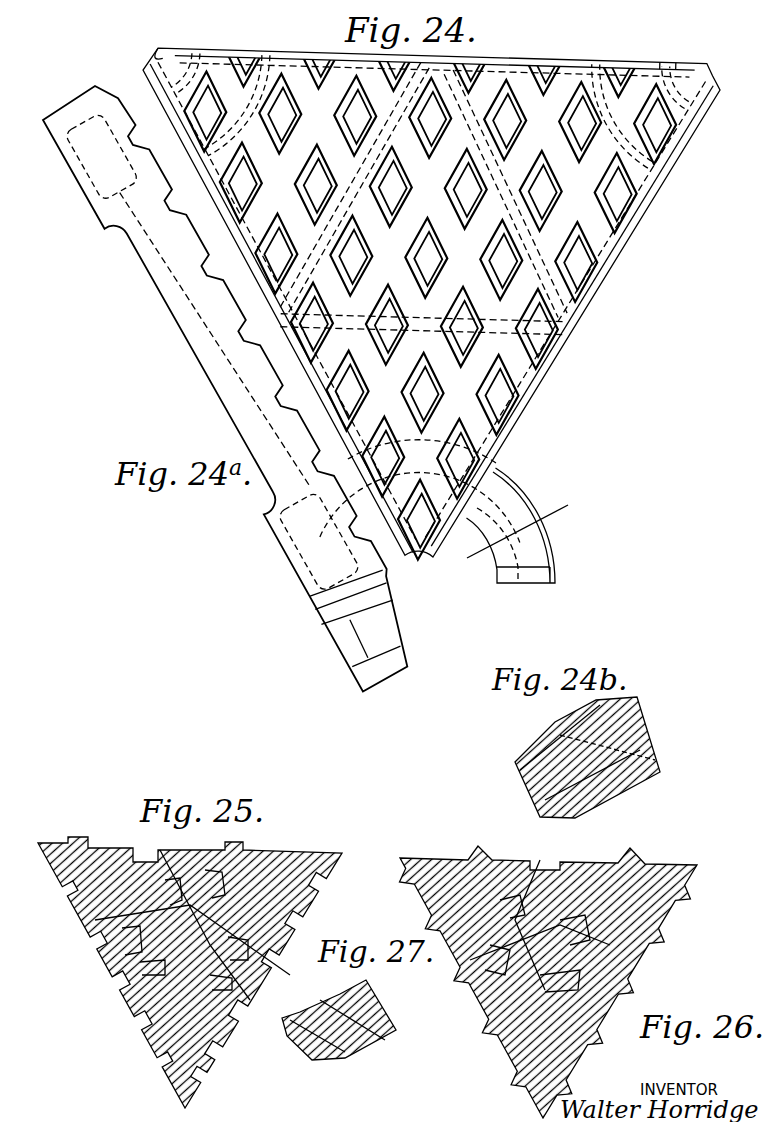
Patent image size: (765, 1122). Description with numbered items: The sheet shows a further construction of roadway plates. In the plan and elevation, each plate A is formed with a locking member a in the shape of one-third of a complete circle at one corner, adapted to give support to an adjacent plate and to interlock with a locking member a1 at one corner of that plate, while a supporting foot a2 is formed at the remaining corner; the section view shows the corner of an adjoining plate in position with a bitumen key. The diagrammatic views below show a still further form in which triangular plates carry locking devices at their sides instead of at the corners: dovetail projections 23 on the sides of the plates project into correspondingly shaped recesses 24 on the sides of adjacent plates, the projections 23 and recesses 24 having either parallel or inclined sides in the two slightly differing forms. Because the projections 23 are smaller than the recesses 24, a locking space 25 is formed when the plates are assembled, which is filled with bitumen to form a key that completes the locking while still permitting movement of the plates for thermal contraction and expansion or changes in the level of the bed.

In FIG. 24, the supporting foot a2 is at (160, 60).
In FIG. 24A, the supporting foot a2 is at (70, 101).
In FIG. 24, the locking member a1 is at (700, 70).
In FIG. 24, the locking member a is at (430, 553).
In FIG. 24A, the locking member a is at (360, 582).
In FIG. 24, the tile plate / strip A is at (426, 286).
In FIG. 24A, the tile plate / strip A is at (212, 333).
In FIG. 25, the tile plate / strip A is at (207, 930).
In FIG. 26, the tile plate / strip A is at (523, 920).
In FIG. 25, the dovetail projection 23 is at (177, 900).
In FIG. 26, the dovetail projection 23 is at (503, 920).
In FIG. 27, the dovetail projection 23 is at (292, 1048).
In FIG. 25, the recess 24 is at (230, 945).
In FIG. 26, the recess 24 is at (503, 915).
In FIG. 27, the recess 24 is at (372, 1003).
In FIG. 27, the locking space 25 is at (325, 1020).